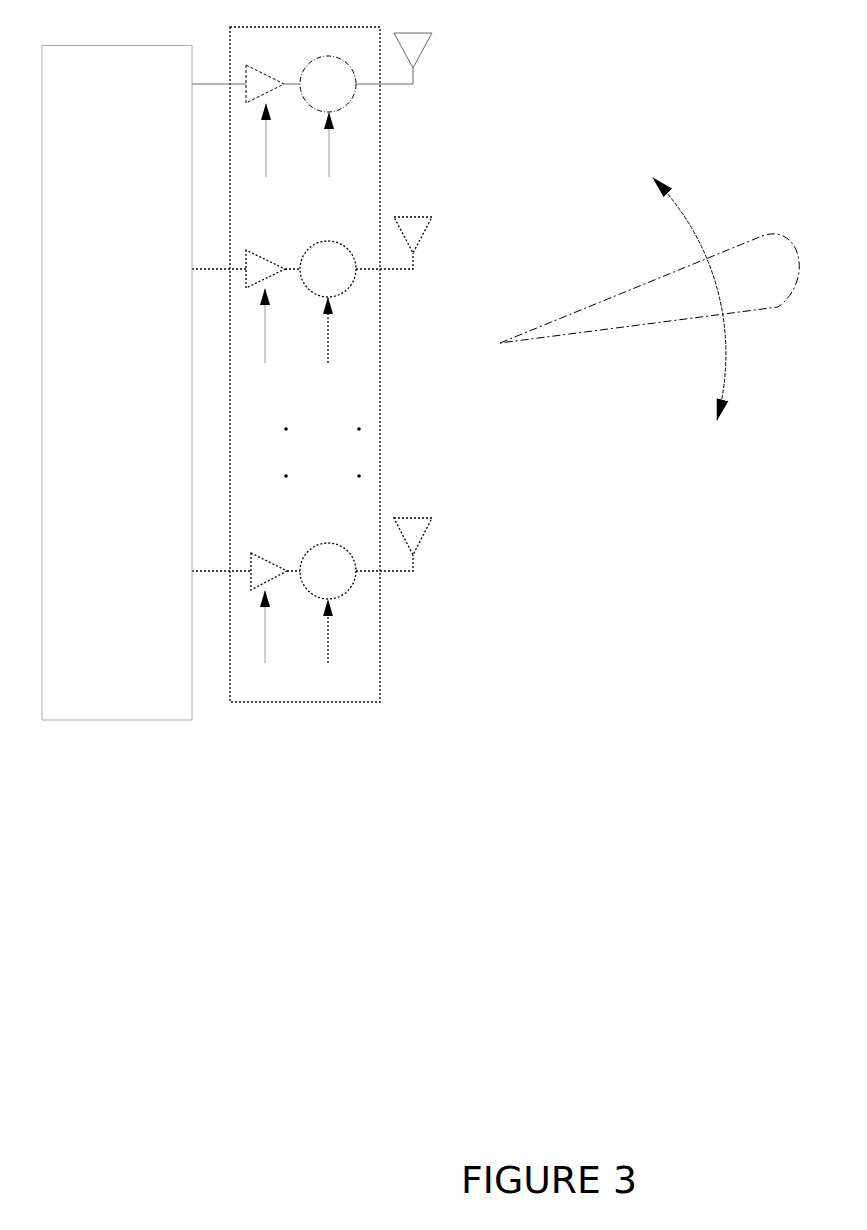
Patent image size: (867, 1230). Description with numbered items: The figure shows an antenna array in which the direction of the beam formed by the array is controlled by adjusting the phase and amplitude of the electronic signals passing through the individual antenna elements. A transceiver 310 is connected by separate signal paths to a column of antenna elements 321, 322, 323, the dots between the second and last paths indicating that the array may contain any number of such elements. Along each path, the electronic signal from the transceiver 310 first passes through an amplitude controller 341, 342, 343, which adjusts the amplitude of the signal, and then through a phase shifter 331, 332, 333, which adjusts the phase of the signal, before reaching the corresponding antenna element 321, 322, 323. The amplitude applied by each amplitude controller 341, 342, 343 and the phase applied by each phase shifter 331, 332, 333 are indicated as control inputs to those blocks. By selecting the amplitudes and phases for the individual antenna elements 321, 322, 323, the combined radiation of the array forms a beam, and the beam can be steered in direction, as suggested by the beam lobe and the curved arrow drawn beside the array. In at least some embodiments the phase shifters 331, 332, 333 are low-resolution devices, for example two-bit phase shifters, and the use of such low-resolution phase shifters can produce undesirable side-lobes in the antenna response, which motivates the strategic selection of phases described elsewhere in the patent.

The transceiver 310 is at (135, 425).
The antenna element 321 is at (424, 52).
The antenna element 322 is at (429, 233).
The antenna element 323 is at (429, 535).
The phase shifter 331 is at (345, 84).
The phase shifter 332 is at (344, 274).
The phase shifter 333 is at (346, 583).
The amplitude controller 341 is at (258, 75).
The amplitude controller 342 is at (259, 263).
The amplitude controller 343 is at (261, 562).